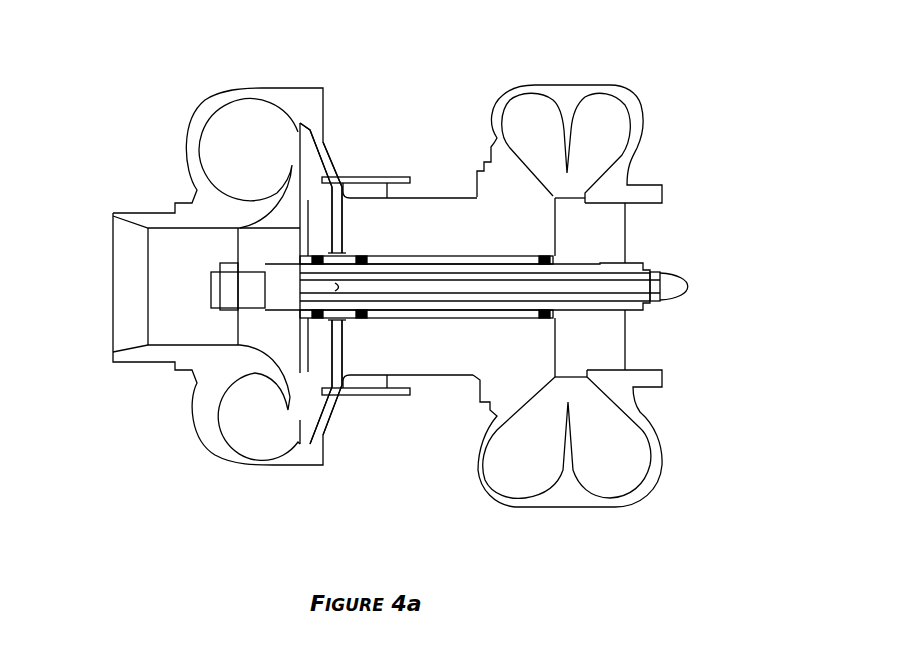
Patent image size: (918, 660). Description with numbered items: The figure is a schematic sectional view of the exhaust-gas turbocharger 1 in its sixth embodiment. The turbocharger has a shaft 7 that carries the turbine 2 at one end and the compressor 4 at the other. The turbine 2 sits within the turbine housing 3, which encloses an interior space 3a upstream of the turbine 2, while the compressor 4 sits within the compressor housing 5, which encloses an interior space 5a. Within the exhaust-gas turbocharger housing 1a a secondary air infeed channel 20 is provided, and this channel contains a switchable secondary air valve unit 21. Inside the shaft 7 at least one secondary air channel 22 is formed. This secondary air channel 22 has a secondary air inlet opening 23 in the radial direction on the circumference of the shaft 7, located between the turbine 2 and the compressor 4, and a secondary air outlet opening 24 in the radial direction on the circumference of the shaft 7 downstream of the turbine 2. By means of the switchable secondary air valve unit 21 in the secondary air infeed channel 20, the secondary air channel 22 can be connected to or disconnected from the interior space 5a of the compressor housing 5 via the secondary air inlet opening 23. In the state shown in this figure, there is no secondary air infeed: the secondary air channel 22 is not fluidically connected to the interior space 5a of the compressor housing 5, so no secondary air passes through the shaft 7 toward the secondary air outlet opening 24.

The exhaust-gas turbocharger 1 is at (682, 61).
The exhaust-gas turbocharger housing 1a is at (392, 225).
The turbine 2 is at (617, 250).
The turbine housing 3 is at (640, 380).
The interior space of the turbine housing 3a is at (615, 130).
The compressor 4 is at (245, 253).
The compressor housing 5 is at (203, 210).
The interior space of the compressor housing 5a is at (218, 158).
The shaft 7 is at (220, 283).
The secondary air infeed channel 20 is at (328, 436).
The secondary air valve unit 21 is at (368, 392).
The secondary air channel 22 is at (524, 290).
The secondary air inlet opening 23 is at (342, 300).
The secondary air outlet opening 24 is at (657, 283).